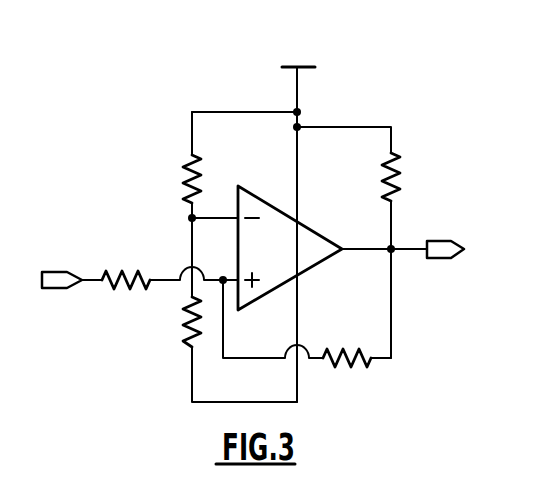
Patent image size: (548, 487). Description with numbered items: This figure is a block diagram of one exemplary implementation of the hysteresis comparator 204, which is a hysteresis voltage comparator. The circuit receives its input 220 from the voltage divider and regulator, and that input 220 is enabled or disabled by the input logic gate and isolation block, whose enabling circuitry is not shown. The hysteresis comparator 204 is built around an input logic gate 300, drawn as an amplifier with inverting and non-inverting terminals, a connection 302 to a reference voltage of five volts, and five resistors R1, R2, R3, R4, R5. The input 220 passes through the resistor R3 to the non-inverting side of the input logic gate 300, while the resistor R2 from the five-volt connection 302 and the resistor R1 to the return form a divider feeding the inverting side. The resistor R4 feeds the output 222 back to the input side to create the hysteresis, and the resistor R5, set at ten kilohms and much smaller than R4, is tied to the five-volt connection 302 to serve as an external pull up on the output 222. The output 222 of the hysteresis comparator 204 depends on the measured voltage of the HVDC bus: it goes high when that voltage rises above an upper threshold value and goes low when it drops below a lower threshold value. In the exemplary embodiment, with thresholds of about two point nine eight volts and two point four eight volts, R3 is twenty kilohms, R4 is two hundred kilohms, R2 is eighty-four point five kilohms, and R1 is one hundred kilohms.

The hysteresis comparator 204 is at (226, 64).
The connection to a reference voltage of 5 volts 302 is at (297, 90).
The input logic gate 300 is at (298, 261).
The input 220 is at (52, 272).
The output 222 is at (435, 241).
The resistor R1 is at (176, 322).
The resistor R2 is at (175, 179).
The resistor R3 is at (126, 265).
The resistor R4 is at (347, 344).
The resistor R5 is at (374, 177).